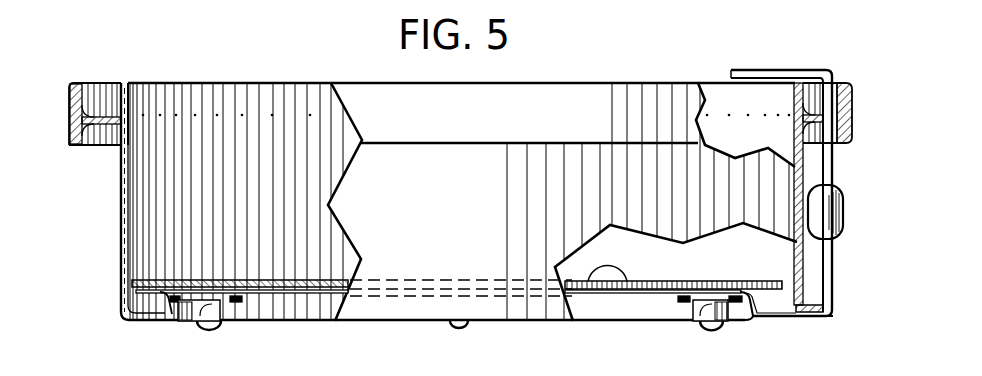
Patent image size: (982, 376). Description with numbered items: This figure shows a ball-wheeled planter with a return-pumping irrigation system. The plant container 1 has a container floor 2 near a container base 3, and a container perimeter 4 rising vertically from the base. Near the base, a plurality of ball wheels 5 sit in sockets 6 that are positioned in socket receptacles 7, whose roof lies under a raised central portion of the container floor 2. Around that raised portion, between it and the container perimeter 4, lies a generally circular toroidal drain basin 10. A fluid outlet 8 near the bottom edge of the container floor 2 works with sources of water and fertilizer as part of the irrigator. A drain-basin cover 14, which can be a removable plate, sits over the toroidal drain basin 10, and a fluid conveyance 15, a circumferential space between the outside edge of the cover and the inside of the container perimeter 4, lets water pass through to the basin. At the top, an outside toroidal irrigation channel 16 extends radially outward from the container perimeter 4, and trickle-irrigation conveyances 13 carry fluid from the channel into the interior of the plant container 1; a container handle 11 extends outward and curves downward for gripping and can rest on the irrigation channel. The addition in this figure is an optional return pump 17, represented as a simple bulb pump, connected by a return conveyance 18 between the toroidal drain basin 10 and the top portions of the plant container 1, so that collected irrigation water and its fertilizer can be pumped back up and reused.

The plant container 1 is at (110, 40).
The container floor 2 is at (593, 297).
The container base 3 is at (86, 302).
The container perimeter 4 is at (122, 210).
The ball wheels 5 is at (715, 320).
The sockets 6 is at (710, 302).
The socket receptacles 7 is at (647, 300).
The fluid outlet 8 is at (803, 317).
The toroidal drain basin 10 is at (143, 305).
The container handle 11 is at (70, 143).
The trickle-irrigation conveyances 13 is at (243, 115).
The drain-basin cover 14 is at (737, 282).
The fluid conveyance 15 is at (132, 282).
The outside toroidal irrigation channel 16 is at (107, 102).
The return pump 17 is at (837, 190).
The return conveyance 18 is at (773, 69).